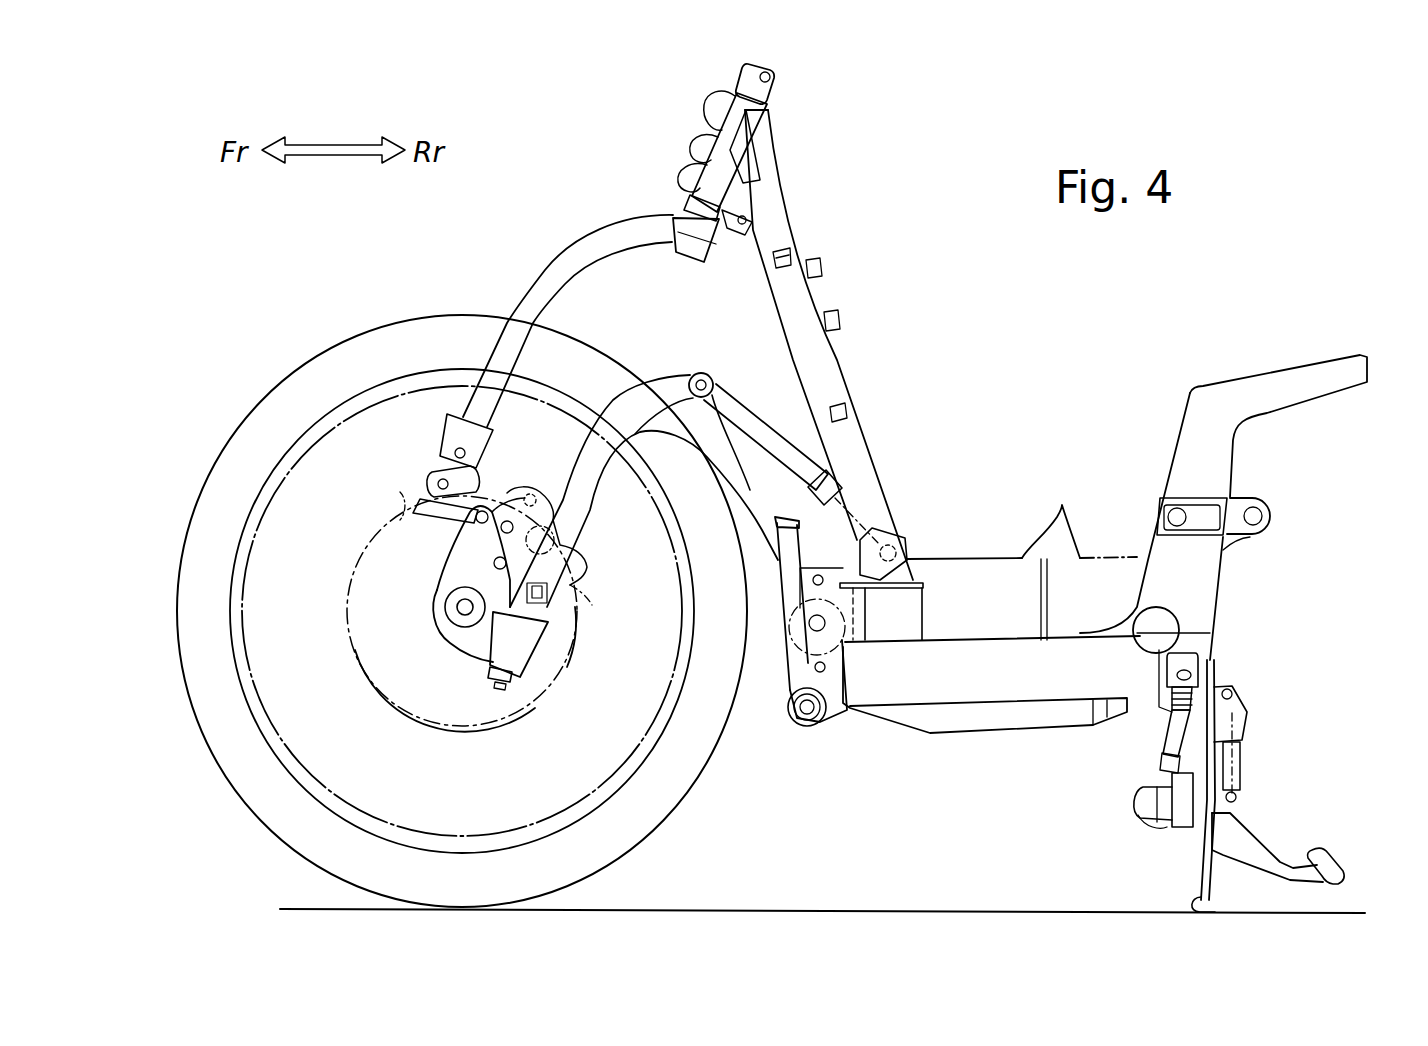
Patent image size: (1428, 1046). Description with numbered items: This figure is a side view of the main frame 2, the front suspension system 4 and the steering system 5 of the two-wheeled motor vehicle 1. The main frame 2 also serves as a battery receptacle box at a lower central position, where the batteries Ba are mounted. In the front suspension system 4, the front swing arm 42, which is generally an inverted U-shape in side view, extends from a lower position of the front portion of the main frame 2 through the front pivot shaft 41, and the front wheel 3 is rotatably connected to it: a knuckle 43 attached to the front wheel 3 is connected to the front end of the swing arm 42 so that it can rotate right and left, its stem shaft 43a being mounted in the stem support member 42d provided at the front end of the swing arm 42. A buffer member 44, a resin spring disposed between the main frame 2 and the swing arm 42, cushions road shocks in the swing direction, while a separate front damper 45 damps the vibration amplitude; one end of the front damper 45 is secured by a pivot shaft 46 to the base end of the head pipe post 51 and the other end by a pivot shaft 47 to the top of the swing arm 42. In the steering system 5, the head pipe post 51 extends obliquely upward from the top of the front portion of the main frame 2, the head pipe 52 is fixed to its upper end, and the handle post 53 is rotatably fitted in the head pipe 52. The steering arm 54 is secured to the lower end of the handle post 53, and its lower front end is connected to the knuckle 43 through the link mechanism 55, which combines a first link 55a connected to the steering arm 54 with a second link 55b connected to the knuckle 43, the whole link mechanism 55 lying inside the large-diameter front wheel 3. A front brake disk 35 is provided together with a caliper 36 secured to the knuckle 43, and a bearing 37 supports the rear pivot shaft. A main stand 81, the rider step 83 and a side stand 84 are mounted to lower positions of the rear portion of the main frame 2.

The two-wheeled motor vehicle 1 is at (166, 298).
The main frame 2 is at (985, 690).
The front wheel 3 is at (282, 380).
The front suspension system 4 is at (856, 723).
The steering system 5 is at (846, 345).
The front brake disk 35 is at (358, 664).
The caliper 36 is at (580, 565).
The bearing 37 is at (1255, 515).
The front pivot shaft 41 is at (810, 716).
The front swing arm 42 is at (663, 385).
The stem support member 42d is at (518, 690).
The knuckle 43 is at (446, 595).
The stem shaft 43a is at (528, 647).
The buffer member 44 is at (800, 660).
The front damper 45 is at (797, 442).
The pivot shaft 46 is at (905, 538).
The pivot shaft 47 is at (706, 376).
The head pipe post 51 is at (860, 455).
The head pipe 52 is at (702, 150).
The handle post 53 is at (745, 72).
The steering arm 54 is at (584, 242).
The link mechanism 55 is at (392, 472).
The first link 55a is at (446, 454).
The second link 55b is at (430, 504).
The main stand 81 is at (1200, 878).
The rider step 83 is at (1165, 630).
The side stand 84 is at (1143, 815).
The batteries Ba is at (1062, 505).